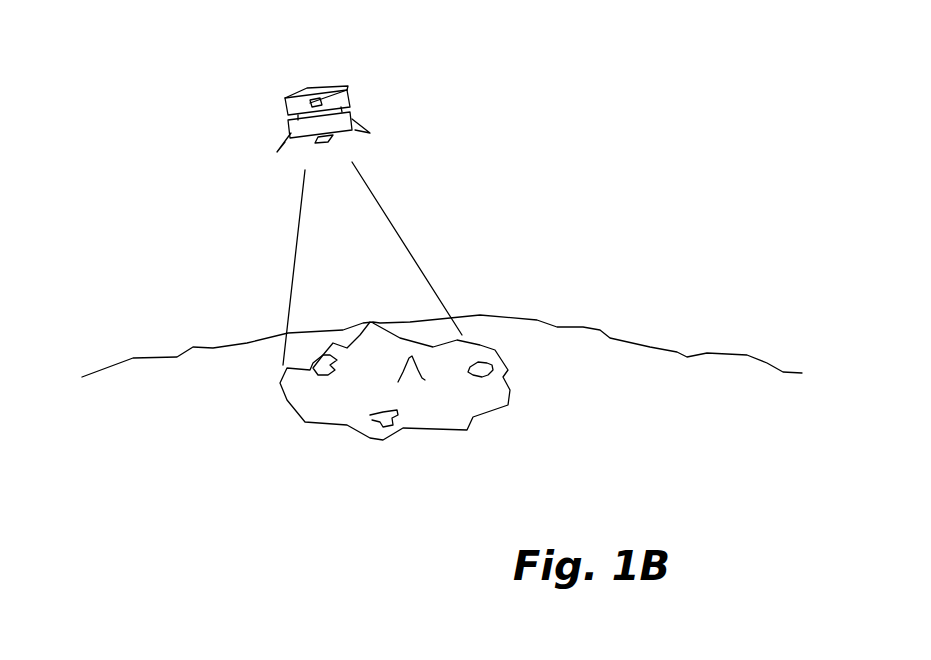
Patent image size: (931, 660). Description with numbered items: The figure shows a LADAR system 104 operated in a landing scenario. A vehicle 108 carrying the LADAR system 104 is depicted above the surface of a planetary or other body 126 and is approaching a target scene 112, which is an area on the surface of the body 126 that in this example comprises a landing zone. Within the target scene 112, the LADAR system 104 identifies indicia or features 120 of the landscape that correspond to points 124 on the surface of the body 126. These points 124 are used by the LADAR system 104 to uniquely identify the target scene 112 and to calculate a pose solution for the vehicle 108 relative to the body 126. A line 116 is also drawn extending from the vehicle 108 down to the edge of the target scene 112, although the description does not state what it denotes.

The LADAR system 104 is at (335, 97).
The vehicle 108 is at (285, 98).
The target scene 112 is at (407, 291).
The altimeter beam 116 is at (295, 228).
The indicia or features 120 is at (395, 365).
The points 124 is at (372, 323).
The planetary or other body 126 is at (602, 328).